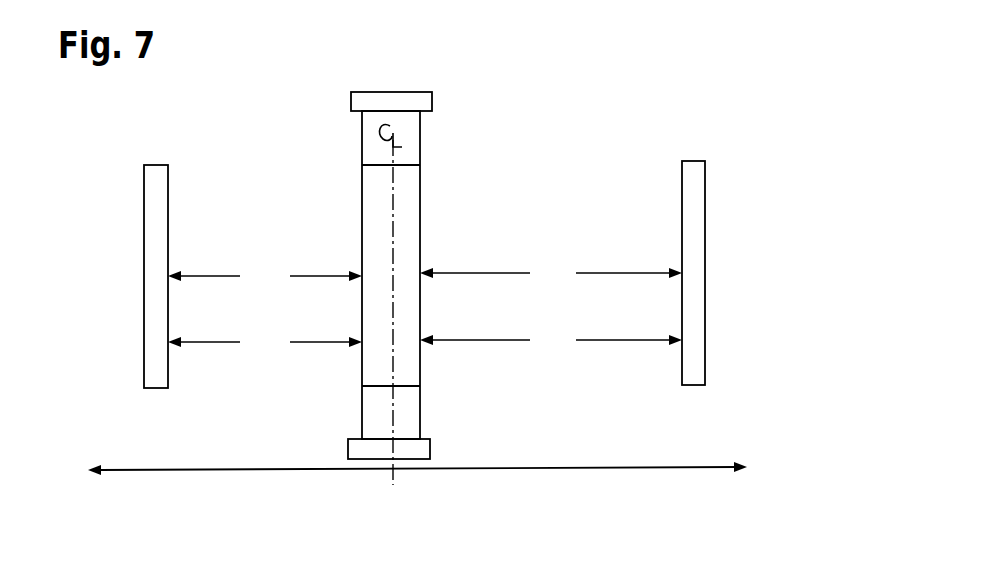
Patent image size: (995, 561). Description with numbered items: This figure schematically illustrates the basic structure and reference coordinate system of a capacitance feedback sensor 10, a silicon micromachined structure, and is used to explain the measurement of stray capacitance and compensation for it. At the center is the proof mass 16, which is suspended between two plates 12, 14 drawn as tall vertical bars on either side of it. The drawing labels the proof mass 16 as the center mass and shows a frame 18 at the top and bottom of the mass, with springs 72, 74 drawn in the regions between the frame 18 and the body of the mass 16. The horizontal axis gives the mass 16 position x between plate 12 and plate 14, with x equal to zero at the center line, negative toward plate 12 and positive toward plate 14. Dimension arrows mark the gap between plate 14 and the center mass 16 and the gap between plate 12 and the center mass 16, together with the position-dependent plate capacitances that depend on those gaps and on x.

The sensor 10 is at (697, 46).
The plate 12 is at (143, 180).
The plate 14 is at (706, 170).
The proof mass 16 is at (421, 209).
The frame 18 is at (433, 97).
The spring 72 is at (413, 145).
The spring 74 is at (409, 404).